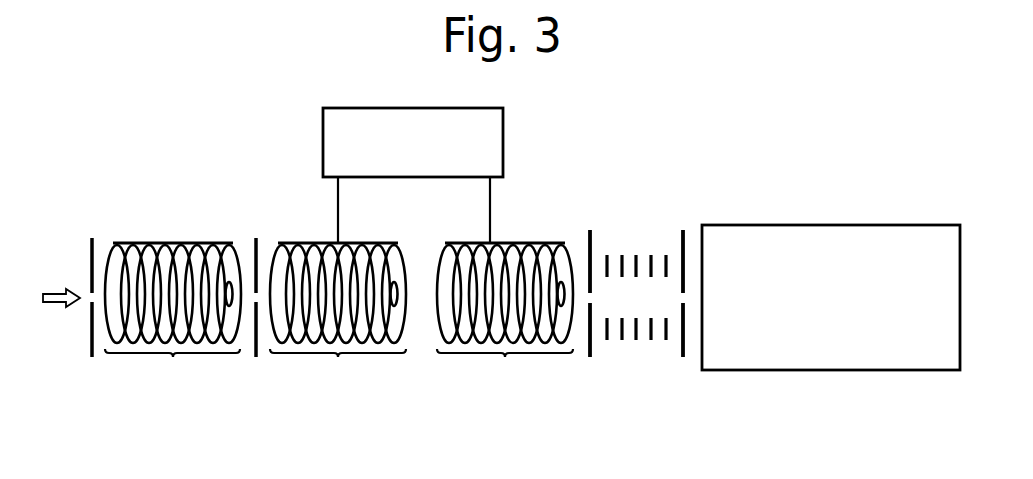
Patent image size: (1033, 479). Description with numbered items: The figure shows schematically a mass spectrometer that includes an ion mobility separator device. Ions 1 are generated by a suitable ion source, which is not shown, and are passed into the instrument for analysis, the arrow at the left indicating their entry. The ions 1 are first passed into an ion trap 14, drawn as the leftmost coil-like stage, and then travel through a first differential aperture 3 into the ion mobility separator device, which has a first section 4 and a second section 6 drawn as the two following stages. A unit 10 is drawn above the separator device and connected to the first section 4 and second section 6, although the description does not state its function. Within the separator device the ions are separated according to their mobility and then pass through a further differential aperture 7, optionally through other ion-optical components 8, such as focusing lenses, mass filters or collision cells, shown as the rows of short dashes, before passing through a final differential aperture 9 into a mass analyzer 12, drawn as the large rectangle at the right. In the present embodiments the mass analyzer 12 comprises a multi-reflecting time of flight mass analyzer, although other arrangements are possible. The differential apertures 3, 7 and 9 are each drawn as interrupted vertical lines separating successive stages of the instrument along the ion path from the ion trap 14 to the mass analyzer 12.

The ions 1 is at (55, 290).
The first differential aperture 3 is at (257, 238).
The first section 4 is at (338, 315).
The second section 6 is at (505, 315).
The further differential aperture 7 is at (590, 230).
The other ion-optical components 8 is at (641, 368).
The final differential aperture 9 is at (683, 230).
The control unit 10 is at (503, 133).
The mass analyzer 12 is at (905, 225).
The ion trap 14 is at (173, 315).